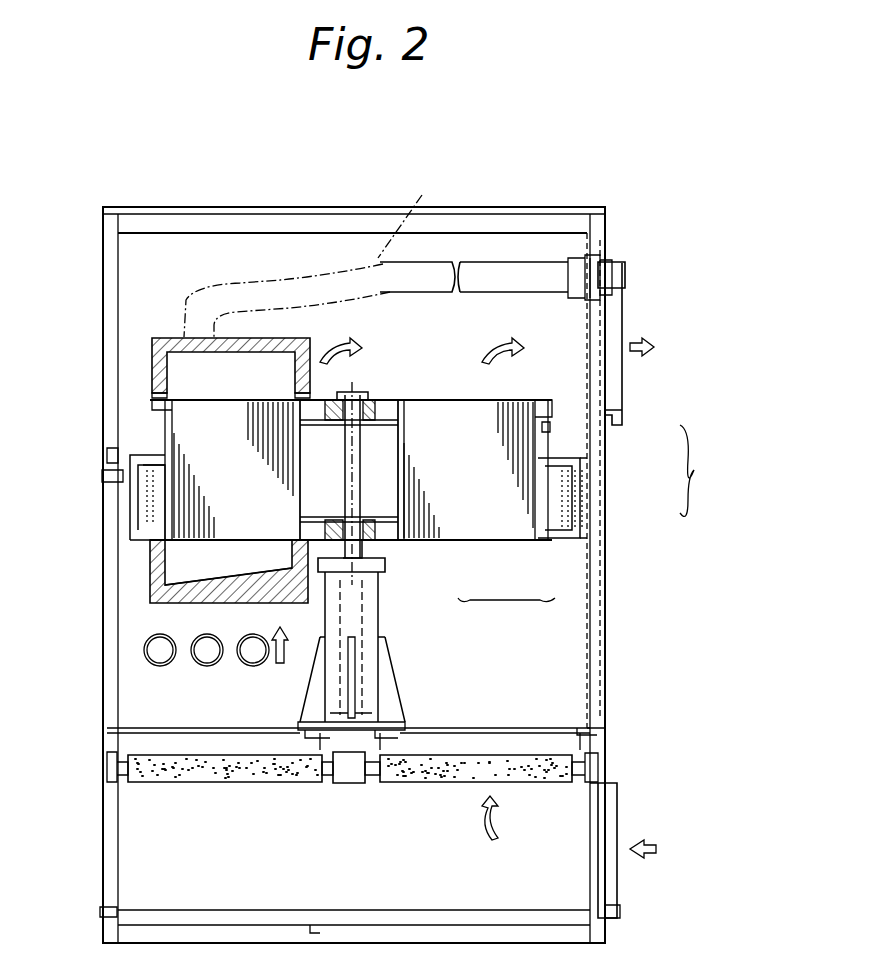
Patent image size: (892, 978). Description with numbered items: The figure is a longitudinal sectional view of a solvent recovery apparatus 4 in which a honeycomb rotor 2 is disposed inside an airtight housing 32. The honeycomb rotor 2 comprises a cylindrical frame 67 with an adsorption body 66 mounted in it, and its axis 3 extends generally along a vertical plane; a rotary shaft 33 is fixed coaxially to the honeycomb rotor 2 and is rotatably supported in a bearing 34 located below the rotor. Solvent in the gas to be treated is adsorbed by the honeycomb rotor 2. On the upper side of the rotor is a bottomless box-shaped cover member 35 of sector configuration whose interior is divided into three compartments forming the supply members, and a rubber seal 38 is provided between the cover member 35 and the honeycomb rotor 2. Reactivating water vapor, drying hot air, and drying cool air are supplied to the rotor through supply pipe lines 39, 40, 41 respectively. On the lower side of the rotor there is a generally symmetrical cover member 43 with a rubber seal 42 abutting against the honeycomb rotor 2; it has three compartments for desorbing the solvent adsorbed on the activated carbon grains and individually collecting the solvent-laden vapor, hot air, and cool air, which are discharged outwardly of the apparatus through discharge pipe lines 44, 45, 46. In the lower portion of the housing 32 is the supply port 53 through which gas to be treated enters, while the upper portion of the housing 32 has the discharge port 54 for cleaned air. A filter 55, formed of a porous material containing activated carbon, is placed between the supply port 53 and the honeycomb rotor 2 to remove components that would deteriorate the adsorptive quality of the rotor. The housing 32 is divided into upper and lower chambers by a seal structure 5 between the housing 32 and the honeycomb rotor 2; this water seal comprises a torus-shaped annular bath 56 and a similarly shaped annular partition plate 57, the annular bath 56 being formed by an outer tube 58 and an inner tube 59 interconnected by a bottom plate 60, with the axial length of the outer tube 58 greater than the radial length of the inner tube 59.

The honeycomb rotor 2 is at (505, 600).
The axis 3 is at (352, 496).
The solvent recovery apparatus 4 is at (590, 145).
The seal structure 5 is at (624, 481).
The housing 32 is at (603, 597).
The rotary shaft 33 is at (355, 471).
The bearing 34 is at (368, 612).
The cover member 35 is at (283, 337).
The rubber seal 38 is at (310, 396).
The supply pipe line 39 is at (495, 233).
The supply pipe line 40 is at (283, 300).
The supply pipe line 41 is at (302, 314).
The rubber seal 42 is at (150, 545).
The cover member 43 is at (150, 583).
The discharge pipe line 44 is at (160, 662).
The discharge pipe line 45 is at (207, 662).
The discharge pipe line 46 is at (253, 662).
The supply port 53 is at (608, 882).
The discharge port 54 is at (617, 317).
The filter 55 is at (300, 783).
The annular bath 56 is at (587, 508).
The annular partition plate 57 is at (567, 458).
The outer tube 58 is at (118, 500).
The inner tube 59 is at (153, 490).
The bottom plate 60 is at (150, 540).
The adsorption body 66 is at (472, 527).
The cylindrical frame 67 is at (540, 498).